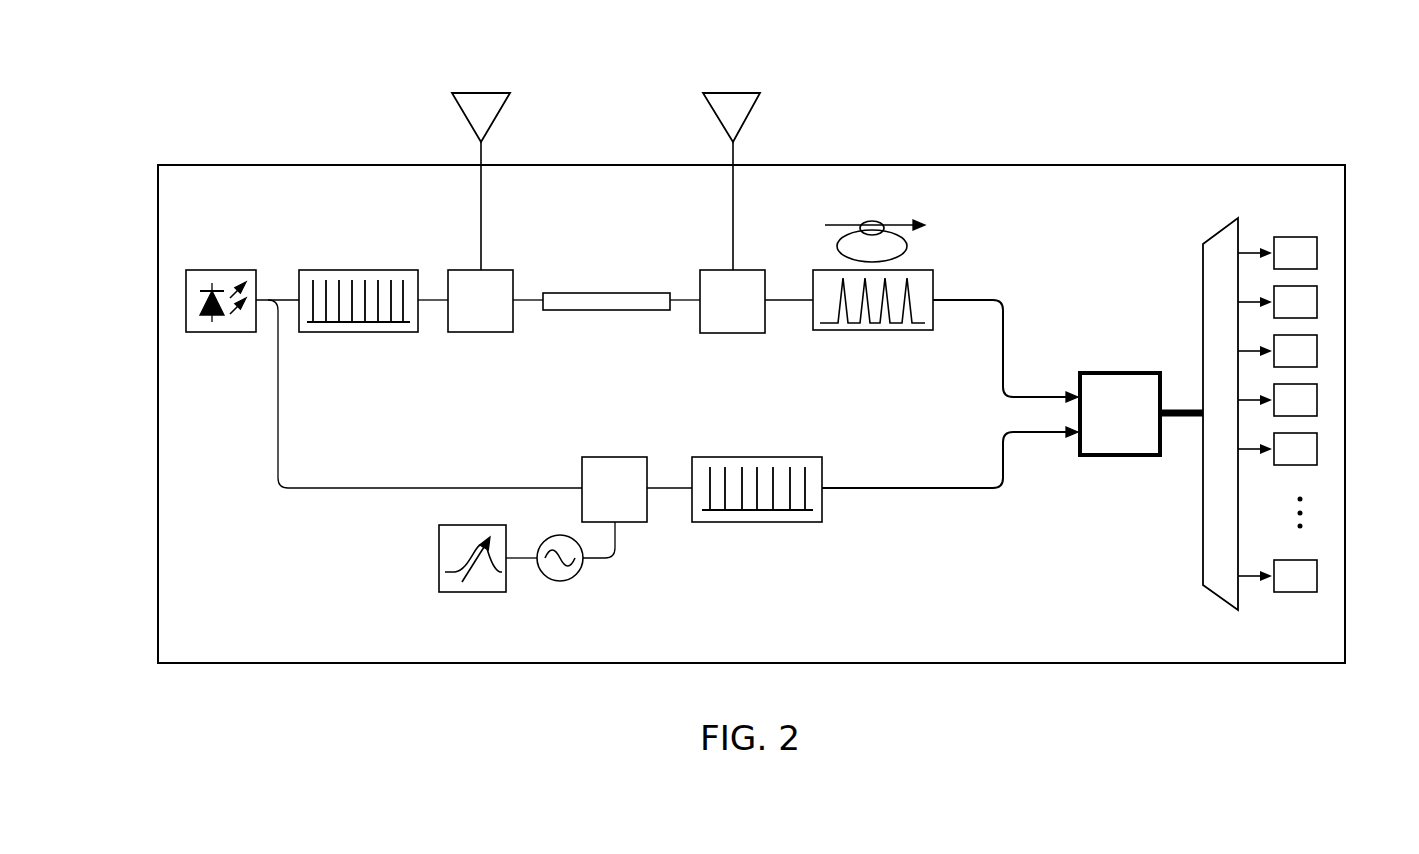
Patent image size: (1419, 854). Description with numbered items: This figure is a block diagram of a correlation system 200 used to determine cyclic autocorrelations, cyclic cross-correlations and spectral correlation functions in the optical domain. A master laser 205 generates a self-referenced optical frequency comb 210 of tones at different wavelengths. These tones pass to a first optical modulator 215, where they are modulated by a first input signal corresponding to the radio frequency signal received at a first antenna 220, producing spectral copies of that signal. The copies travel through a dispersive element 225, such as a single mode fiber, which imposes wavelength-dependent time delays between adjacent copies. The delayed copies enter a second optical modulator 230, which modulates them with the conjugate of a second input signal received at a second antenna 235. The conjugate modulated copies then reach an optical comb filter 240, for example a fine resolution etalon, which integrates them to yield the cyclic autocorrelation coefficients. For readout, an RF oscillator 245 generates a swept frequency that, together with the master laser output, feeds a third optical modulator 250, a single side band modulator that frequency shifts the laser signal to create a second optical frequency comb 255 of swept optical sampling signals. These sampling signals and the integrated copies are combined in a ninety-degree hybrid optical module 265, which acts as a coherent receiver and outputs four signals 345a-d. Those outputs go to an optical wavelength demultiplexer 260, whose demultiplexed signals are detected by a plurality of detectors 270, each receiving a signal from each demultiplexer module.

The correlation system 200 is at (132, 73).
The master laser 205 is at (234, 270).
The optical frequency comb 210 is at (349, 270).
The first optical modulator 215 is at (510, 270).
The first antenna 220 is at (455, 103).
The dispersive element 225 is at (615, 293).
The second optical modulator 230 is at (765, 270).
The second antenna 235 is at (705, 103).
The optical comb filter 240 is at (932, 270).
The RF oscillator 245 is at (548, 602).
The third optical modulator 250 is at (578, 470).
The second optical frequency comb 255 is at (750, 542).
The optical wavelength demultiplexer 260 is at (1200, 280).
The 90° hybrid optical module 265 is at (1115, 346).
The plurality of detectors 270 is at (1294, 226).
The hybrid output signals 345a-d is at (1182, 418).